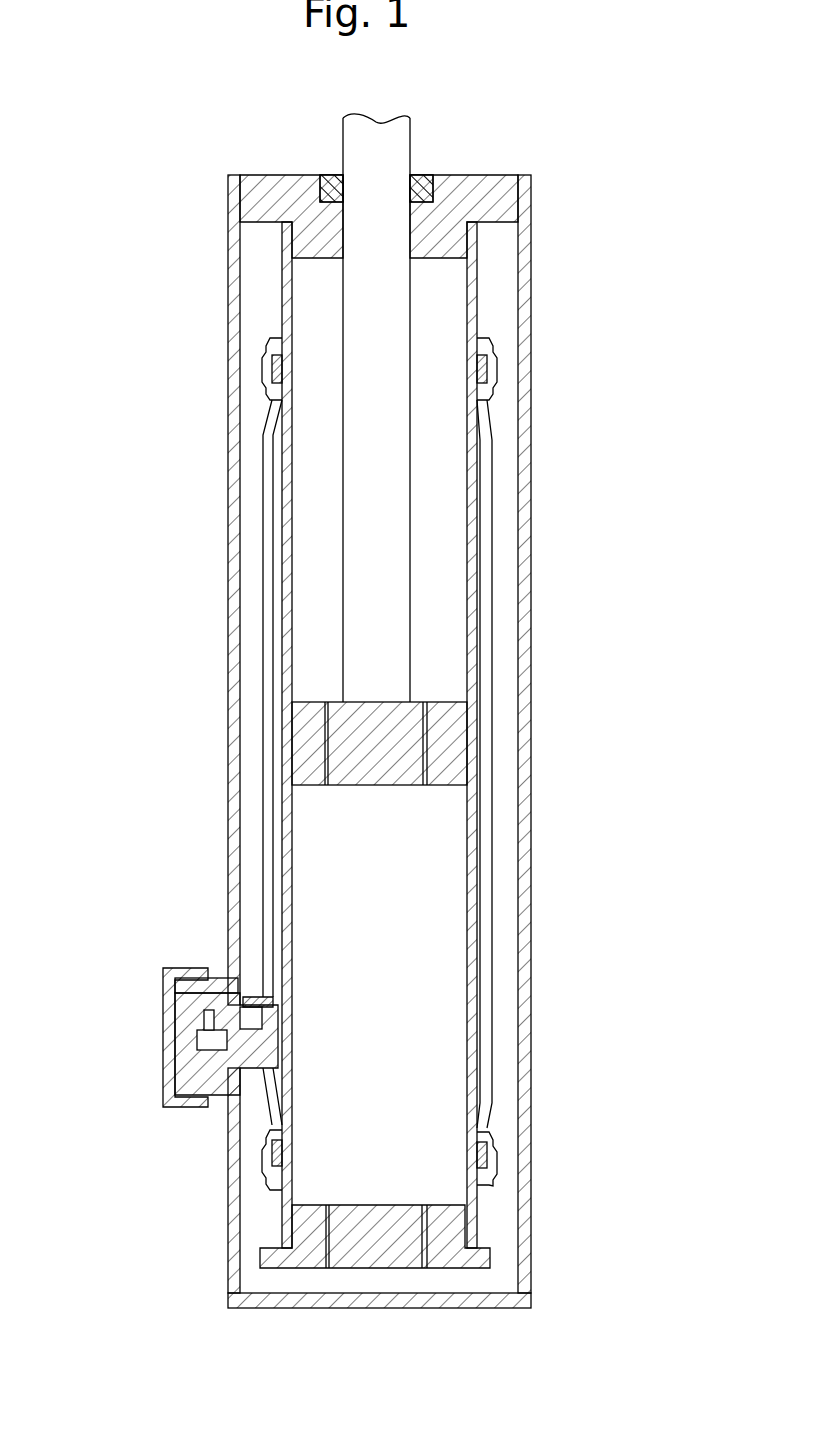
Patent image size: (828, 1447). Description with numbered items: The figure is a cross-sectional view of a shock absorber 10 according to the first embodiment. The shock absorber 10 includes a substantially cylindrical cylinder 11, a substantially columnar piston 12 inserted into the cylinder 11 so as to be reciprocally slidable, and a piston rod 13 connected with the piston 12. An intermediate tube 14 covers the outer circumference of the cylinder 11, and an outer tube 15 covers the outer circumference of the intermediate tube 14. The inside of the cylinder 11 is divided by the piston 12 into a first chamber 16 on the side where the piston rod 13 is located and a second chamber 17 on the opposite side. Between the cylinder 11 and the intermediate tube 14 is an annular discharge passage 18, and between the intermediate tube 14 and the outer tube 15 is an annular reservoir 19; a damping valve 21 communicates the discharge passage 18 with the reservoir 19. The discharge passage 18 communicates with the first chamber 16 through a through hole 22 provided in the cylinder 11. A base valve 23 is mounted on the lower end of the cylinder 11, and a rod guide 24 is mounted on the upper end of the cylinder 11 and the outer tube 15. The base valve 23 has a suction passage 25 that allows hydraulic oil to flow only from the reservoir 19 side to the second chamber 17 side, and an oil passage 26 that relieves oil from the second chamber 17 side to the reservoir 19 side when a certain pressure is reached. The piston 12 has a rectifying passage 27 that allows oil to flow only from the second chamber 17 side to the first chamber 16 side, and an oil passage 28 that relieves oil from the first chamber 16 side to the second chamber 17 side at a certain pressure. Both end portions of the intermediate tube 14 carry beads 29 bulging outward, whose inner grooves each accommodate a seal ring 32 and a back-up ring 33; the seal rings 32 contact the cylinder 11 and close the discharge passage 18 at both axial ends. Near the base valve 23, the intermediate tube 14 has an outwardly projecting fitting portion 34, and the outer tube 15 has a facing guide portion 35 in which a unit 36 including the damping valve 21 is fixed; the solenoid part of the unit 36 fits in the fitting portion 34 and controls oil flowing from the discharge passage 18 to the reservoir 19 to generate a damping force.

The shock absorber 10 is at (590, 828).
The cylinder 11 is at (473, 1205).
The piston 12 is at (455, 732).
The piston rod 13 is at (395, 610).
The intermediate tube 14 is at (485, 995).
The outer tube 15 is at (525, 905).
The first chamber 16 is at (452, 504).
The second chamber 17 is at (395, 992).
The discharge passage 18 is at (480, 1042).
The reservoir 19 is at (502, 1088).
The damping valve 21 is at (175, 1048).
The through hole 22 is at (478, 450).
The base valve 23 is at (375, 1252).
The rod guide 24 is at (468, 175).
The suction passage 25 is at (322, 1252).
The oil passage 26 is at (430, 1252).
The rectifying passage 27 is at (328, 748).
The oil passage 28 is at (427, 762).
The bead 29 is at (493, 367).
The seal ring 32 is at (275, 375).
The back-up ring 33 is at (265, 365).
The fitting portion 34 is at (258, 997).
The guide portion 35 is at (185, 975).
The unit 36 is at (163, 1008).